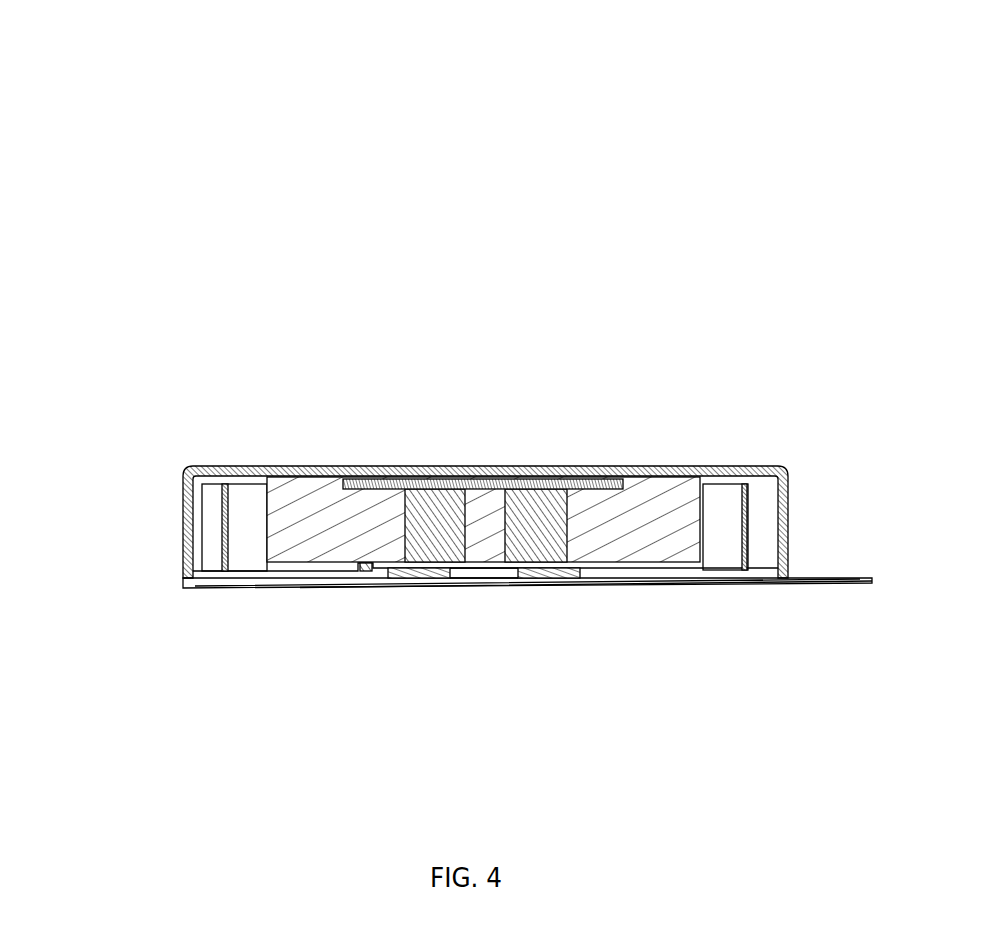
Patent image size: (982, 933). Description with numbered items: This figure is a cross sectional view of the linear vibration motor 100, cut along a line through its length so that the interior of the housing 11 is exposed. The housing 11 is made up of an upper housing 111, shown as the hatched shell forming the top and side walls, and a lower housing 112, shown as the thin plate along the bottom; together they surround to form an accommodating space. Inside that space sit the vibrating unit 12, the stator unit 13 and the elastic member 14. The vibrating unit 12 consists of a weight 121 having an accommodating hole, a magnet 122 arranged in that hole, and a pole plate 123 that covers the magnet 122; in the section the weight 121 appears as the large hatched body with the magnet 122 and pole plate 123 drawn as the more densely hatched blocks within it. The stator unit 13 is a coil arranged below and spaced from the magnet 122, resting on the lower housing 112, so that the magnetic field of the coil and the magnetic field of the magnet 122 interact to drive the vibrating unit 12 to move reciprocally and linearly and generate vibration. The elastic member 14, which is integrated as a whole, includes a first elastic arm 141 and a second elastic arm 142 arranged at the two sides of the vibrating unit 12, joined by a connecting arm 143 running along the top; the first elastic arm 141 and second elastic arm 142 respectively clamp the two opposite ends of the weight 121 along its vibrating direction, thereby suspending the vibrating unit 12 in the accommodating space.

The linear vibration motor 100 is at (486, 40).
The housing 11 is at (92, 483).
The upper housing 111 is at (182, 538).
The lower housing 112 is at (205, 588).
The vibrating unit 12 is at (695, 635).
The weight 121 is at (607, 545).
The magnet 122 is at (540, 535).
The pole plate 123 is at (473, 490).
The stator unit 13 is at (432, 572).
The elastic member 14 is at (655, 393).
The first elastic arm 141 is at (723, 512).
The second elastic arm 142 is at (243, 502).
The connecting arm 143 is at (335, 477).